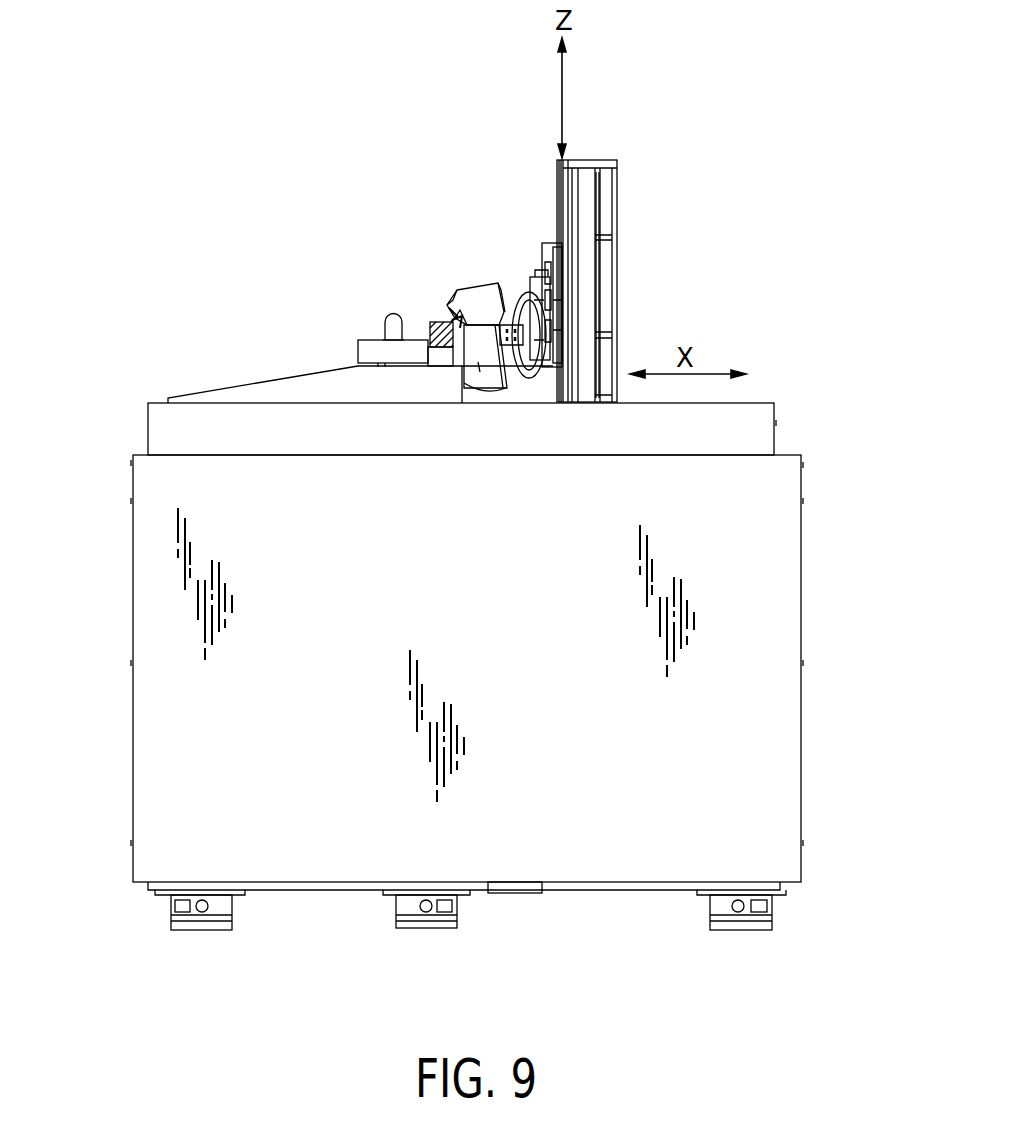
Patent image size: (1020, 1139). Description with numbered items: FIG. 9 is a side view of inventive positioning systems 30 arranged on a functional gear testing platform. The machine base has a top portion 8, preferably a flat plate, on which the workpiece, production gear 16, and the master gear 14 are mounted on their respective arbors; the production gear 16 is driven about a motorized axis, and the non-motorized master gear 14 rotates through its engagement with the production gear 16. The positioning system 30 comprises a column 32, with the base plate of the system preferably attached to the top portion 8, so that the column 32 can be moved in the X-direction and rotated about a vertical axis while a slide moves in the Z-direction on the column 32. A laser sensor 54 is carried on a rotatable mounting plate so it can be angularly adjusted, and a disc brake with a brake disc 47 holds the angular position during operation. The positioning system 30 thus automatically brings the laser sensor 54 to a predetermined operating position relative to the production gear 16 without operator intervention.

The top portion 8 is at (172, 431).
The master gear 14 is at (358, 350).
The production gear 16 is at (436, 322).
The positioning system 30 is at (575, 156).
The column 32 is at (586, 206).
The brake disc 47 is at (518, 380).
The laser sensor 54 is at (478, 290).